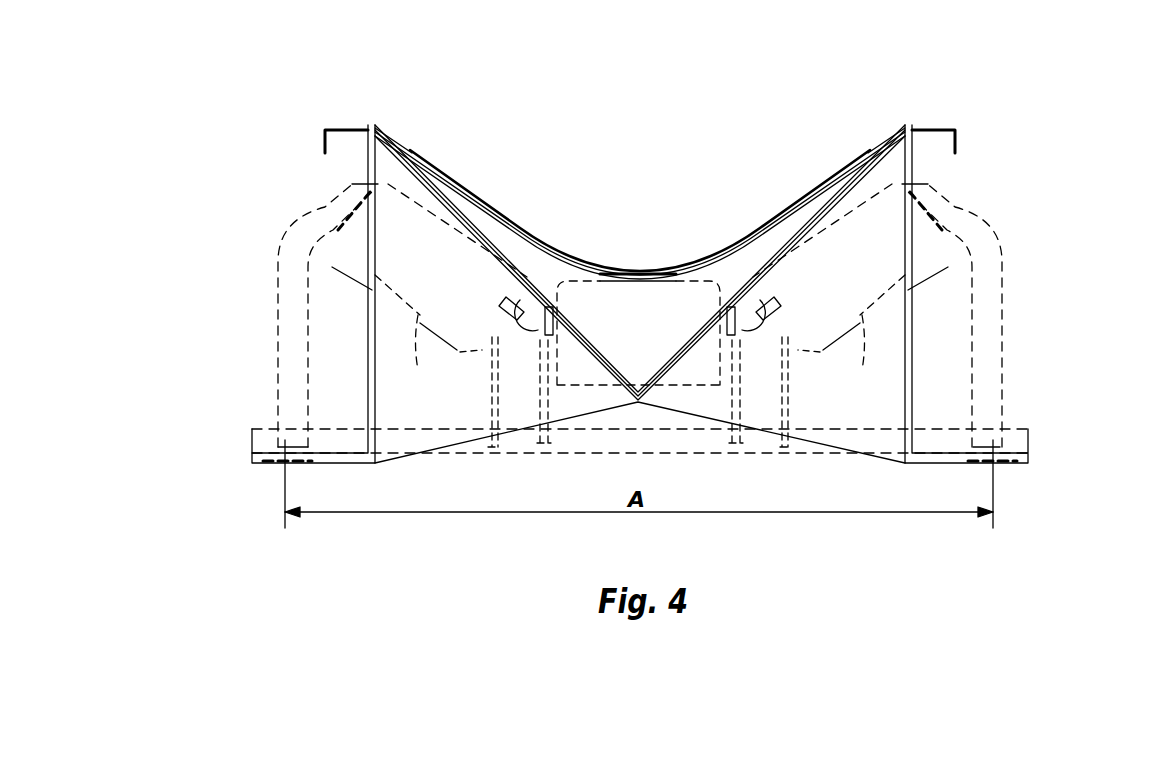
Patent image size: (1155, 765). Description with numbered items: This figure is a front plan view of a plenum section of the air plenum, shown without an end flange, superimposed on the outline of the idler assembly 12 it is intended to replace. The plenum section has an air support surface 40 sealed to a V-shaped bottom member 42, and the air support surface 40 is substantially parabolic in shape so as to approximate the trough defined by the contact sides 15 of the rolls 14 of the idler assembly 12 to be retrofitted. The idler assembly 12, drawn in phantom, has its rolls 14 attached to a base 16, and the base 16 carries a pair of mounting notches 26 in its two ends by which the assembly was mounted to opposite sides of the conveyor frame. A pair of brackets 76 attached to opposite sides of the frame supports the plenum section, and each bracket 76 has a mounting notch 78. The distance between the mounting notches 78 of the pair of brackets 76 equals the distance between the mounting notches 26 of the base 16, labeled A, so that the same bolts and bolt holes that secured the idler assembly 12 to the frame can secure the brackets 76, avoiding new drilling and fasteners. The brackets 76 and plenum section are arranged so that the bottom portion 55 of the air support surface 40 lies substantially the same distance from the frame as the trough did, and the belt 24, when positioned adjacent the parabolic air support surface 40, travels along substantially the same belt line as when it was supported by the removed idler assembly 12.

The idler assembly 12 is at (990, 278).
The roll 14 is at (640, 361).
The contact side 15 is at (676, 283).
The base 16 is at (1020, 440).
The belt 24 is at (800, 200).
The mounting notch 26 is at (282, 465).
The air support surface 40 is at (878, 140).
The V-shaped bottom member 42 is at (563, 335).
The bottom portion 55 is at (637, 270).
The bracket 76 is at (912, 385).
The mounting notch 78 is at (276, 465).